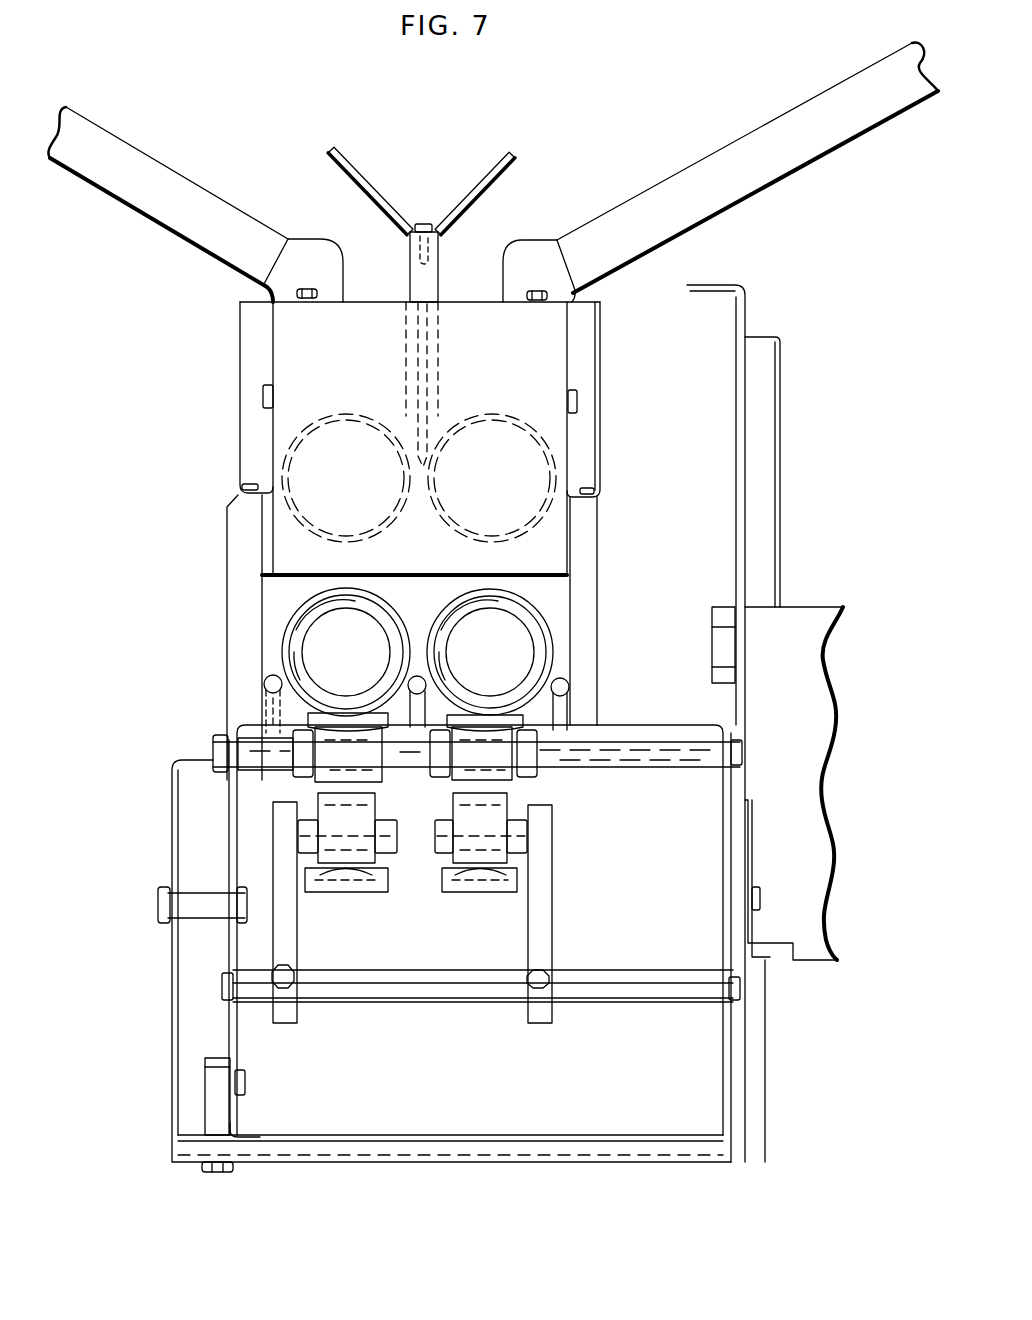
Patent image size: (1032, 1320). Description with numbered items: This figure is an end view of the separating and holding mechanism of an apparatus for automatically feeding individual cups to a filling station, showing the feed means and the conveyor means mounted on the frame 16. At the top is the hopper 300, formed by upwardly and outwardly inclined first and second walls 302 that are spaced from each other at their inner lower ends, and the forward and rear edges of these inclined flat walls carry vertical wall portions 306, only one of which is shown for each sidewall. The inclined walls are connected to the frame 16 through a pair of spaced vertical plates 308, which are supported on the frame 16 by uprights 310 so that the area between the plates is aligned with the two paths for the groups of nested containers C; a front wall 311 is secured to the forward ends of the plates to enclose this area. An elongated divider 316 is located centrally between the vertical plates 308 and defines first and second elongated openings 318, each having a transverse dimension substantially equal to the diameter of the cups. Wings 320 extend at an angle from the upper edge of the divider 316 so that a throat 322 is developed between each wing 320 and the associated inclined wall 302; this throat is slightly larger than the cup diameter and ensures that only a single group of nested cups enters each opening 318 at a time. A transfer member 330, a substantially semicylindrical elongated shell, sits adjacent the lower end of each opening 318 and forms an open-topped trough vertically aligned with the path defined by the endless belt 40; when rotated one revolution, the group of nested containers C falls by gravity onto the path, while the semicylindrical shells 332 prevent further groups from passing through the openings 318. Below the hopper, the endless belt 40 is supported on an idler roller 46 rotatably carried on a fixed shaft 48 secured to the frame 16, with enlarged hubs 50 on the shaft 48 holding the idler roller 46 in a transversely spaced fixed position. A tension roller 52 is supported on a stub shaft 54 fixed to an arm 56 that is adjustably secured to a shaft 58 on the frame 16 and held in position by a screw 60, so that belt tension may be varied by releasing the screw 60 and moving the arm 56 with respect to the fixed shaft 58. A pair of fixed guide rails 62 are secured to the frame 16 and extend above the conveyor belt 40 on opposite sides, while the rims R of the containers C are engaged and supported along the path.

The hopper 300 is at (224, 114).
The inclined wall 302 is at (169, 233).
The vertical wall portion 306 is at (192, 203).
The vertical plate 308 is at (273, 427).
The upright 310 is at (587, 577).
The front wall 311 is at (307, 357).
The divider 316 is at (413, 243).
The elongated opening 318 is at (355, 263).
The wing 320 is at (352, 166).
The throat 322 is at (263, 204).
The transfer member 330 is at (275, 480).
The semicylindrical shell 332 is at (455, 537).
The container C is at (332, 600).
The rim R is at (407, 678).
The guide rail 62 is at (335, 628).
The endless belt 40 is at (510, 725).
The idler roller 46 is at (497, 775).
The fixed shaft 48 is at (257, 747).
The enlarged hub 50 is at (302, 743).
The frame 16 is at (233, 827).
The tension roller 52 is at (497, 845).
The stub shaft 54 is at (520, 833).
The arm 56 is at (540, 940).
The shaft 58 is at (627, 997).
The screw 60 is at (530, 973).